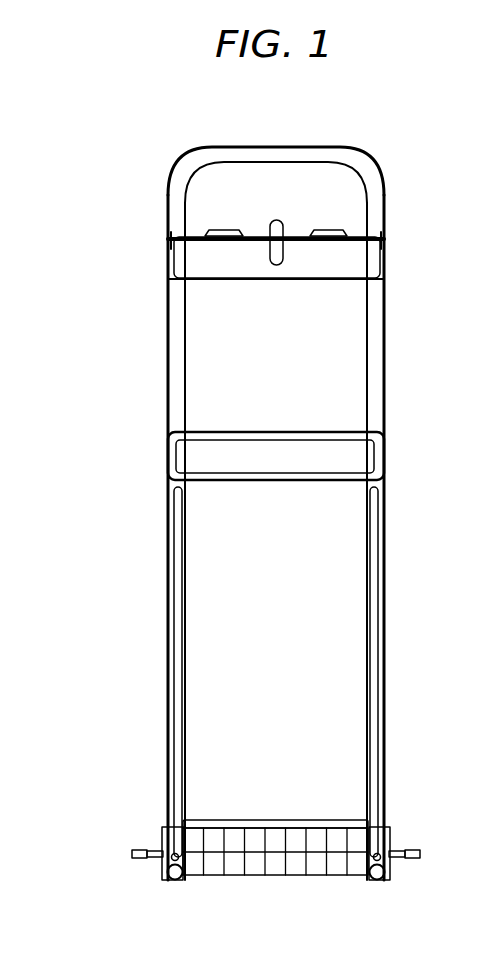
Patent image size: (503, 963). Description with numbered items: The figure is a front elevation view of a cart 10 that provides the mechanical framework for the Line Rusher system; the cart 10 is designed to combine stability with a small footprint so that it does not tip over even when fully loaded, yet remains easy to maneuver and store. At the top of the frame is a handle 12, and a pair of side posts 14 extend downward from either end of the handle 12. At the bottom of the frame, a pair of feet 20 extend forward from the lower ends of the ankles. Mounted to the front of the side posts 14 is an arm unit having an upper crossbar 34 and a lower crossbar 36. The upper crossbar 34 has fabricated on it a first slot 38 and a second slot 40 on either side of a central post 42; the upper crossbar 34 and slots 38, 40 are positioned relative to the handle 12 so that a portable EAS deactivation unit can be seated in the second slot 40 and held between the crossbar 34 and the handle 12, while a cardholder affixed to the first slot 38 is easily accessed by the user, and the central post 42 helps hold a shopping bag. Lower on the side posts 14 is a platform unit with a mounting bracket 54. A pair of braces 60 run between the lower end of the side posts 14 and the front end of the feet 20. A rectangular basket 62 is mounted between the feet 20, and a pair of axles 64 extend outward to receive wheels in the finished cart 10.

The cart 10 is at (370, 110).
The handle 12 is at (266, 147).
The side posts 14 is at (168, 325).
The feet 20 is at (176, 880).
The upper crossbar 34 is at (258, 236).
The lower crossbar 36 is at (277, 282).
The first slot 38 is at (215, 230).
The second slot 40 is at (338, 230).
The central post 42 is at (283, 222).
The mounting bracket 54 is at (279, 432).
The braces 60 is at (180, 671).
The basket 62 is at (275, 820).
The axles 64 is at (147, 850).